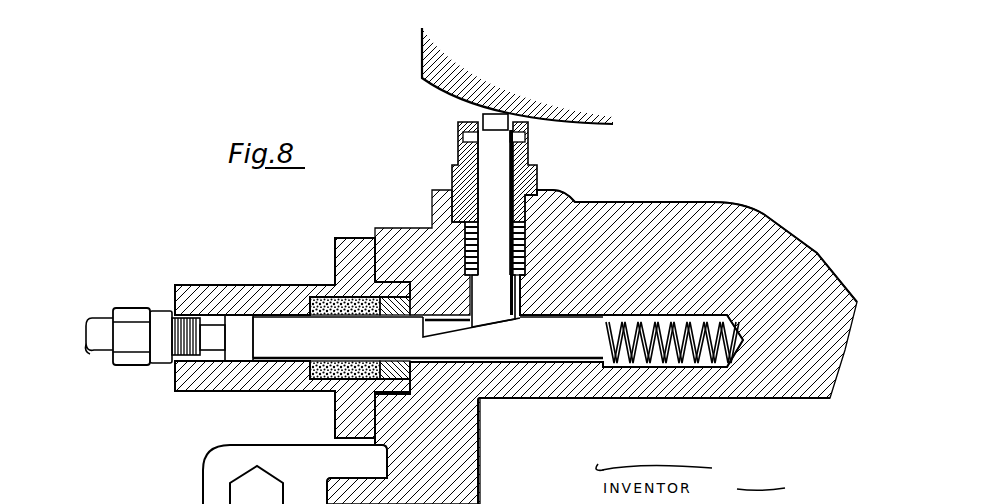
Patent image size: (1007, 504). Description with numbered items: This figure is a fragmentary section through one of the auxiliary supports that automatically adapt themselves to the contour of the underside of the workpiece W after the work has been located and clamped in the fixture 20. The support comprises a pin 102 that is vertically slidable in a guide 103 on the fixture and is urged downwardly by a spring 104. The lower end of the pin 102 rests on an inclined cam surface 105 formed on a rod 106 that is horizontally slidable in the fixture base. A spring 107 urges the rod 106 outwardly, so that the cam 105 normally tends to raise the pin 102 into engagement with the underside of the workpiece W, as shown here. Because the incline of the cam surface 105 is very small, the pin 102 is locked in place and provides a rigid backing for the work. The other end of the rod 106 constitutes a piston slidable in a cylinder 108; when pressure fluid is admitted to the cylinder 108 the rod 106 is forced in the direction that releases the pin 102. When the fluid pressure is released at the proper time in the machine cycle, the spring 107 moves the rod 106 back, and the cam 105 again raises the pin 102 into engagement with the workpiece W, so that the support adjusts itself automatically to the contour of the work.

The housing 20 is at (777, 211).
The workpiece W is at (422, 70).
The pin 102 is at (480, 117).
The guide 103 is at (538, 182).
The spring 104 is at (518, 247).
The inclined cam surface 105 is at (447, 329).
The rod 106 is at (290, 362).
The spring 107 is at (666, 322).
The cylinder 108 is at (226, 365).